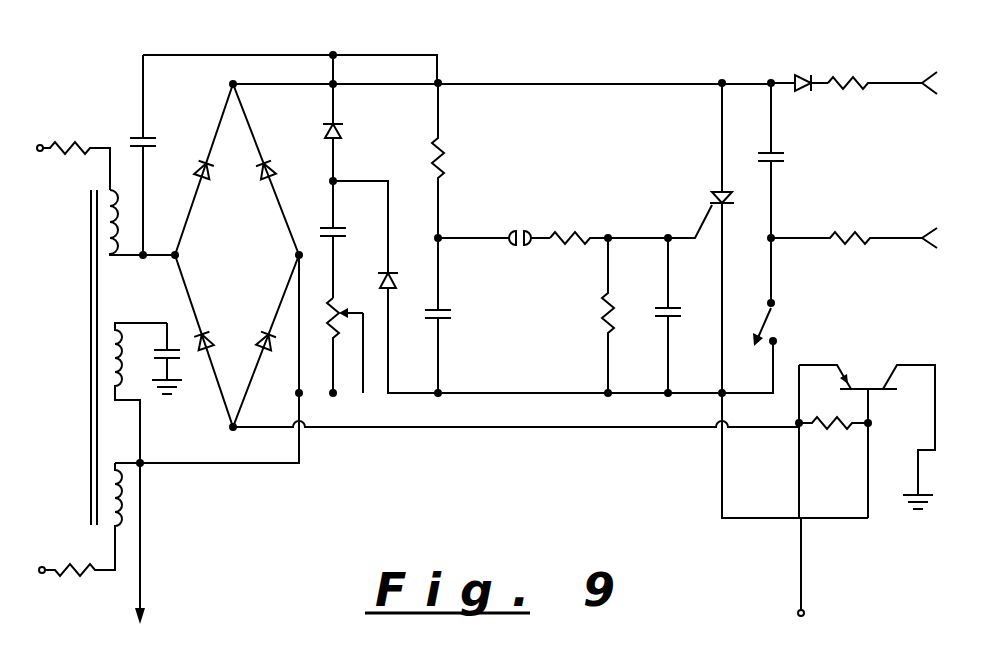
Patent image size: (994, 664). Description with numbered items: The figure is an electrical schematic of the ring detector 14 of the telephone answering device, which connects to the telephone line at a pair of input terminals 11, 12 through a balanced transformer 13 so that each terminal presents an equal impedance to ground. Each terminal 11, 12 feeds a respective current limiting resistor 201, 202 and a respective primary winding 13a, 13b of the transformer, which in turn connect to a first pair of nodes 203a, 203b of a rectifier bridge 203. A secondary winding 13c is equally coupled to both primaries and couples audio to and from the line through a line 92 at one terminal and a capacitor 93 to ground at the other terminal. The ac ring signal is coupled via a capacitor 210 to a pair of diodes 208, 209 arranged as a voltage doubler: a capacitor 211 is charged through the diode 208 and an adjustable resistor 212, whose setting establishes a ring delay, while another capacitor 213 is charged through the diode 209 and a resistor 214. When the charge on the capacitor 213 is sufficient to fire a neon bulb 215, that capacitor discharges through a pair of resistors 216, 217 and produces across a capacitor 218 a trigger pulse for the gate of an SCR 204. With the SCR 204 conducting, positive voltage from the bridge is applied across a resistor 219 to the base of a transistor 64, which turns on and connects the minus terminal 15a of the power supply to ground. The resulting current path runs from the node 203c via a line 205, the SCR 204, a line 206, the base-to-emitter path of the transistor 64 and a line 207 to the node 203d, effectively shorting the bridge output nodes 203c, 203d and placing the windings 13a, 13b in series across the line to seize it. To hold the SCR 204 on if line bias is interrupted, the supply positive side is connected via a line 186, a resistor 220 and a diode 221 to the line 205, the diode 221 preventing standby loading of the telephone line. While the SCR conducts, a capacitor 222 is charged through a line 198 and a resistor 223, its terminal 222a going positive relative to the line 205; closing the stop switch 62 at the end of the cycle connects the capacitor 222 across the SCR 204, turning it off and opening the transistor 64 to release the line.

The telephone line input terminal 11 is at (40, 145).
The telephone line input terminal 12 is at (43, 575).
The balanced transformer 13 is at (75, 215).
The primary winding 13a is at (120, 235).
The primary winding 13b is at (122, 498).
The secondary winding 13c is at (121, 358).
The ring detector 14 is at (589, 28).
The minus terminal 15a is at (797, 614).
The stop switch 62 is at (775, 302).
The transistor 64 is at (883, 392).
The line 92 is at (143, 593).
The capacitor 93 is at (183, 362).
The line 186 is at (900, 81).
The line 198 is at (905, 236).
The current limiting resistor 201 is at (78, 140).
The current limiting resistor 202 is at (84, 574).
The rectifier bridge 203 is at (237, 255).
The bridge node 203a is at (178, 255).
The bridge node 203b is at (296, 258).
The bridge node 203c is at (231, 82).
The bridge node 203d is at (230, 430).
The SCR 204 is at (712, 200).
The line 205 is at (628, 80).
The line 206 is at (720, 462).
The line 207 is at (318, 430).
The diode 208 is at (345, 131).
The diode 209 is at (400, 278).
The capacitor 210 is at (140, 134).
The capacitor 211 is at (326, 226).
The adjustable resistor 212 is at (338, 300).
The capacitor 213 is at (447, 322).
The resistor 214 is at (432, 158).
The neon bulb 215 is at (527, 230).
The resistor 216 is at (568, 243).
The resistor 217 is at (604, 312).
The capacitor 218 is at (673, 305).
The resistor 219 is at (828, 432).
The resistor 220 is at (838, 78).
The diode 221 is at (793, 80).
The capacitor 222 is at (782, 150).
The capacitor terminal 222a is at (775, 200).
The resistor 223 is at (846, 232).